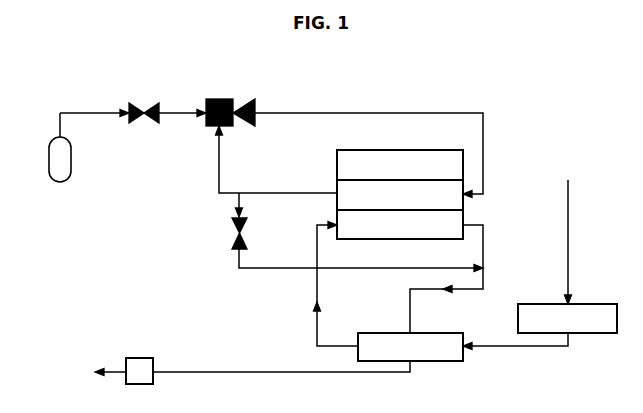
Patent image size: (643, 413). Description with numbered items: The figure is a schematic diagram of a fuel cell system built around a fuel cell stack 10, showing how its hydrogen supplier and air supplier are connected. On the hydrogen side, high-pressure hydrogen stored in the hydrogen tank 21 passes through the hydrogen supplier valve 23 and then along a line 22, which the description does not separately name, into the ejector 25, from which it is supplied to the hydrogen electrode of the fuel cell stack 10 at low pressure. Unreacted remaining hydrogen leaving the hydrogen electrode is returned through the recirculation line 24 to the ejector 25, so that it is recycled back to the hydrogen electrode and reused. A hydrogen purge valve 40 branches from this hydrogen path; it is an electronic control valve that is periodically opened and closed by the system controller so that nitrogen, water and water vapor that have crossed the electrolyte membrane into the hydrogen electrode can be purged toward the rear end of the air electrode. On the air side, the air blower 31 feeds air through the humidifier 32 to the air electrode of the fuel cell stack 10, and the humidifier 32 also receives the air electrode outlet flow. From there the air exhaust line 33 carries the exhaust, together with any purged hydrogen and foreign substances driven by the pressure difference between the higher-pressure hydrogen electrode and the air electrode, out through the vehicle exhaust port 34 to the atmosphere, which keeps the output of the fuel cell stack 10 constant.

The fuel cell stack 10 is at (337, 158).
The hydrogen tank 21 is at (60, 182).
The hydrogen supply line 22 is at (177, 108).
The hydrogen supplier valve 23 is at (146, 123).
The recirculation line 24 is at (219, 170).
The ejector 25 is at (218, 99).
The air blower 31 is at (537, 304).
The humidifier 32 is at (440, 361).
The air exhaust line 33 is at (218, 372).
The vehicle exhaust port 34 is at (137, 358).
The hydrogen purge valve 40 is at (232, 235).